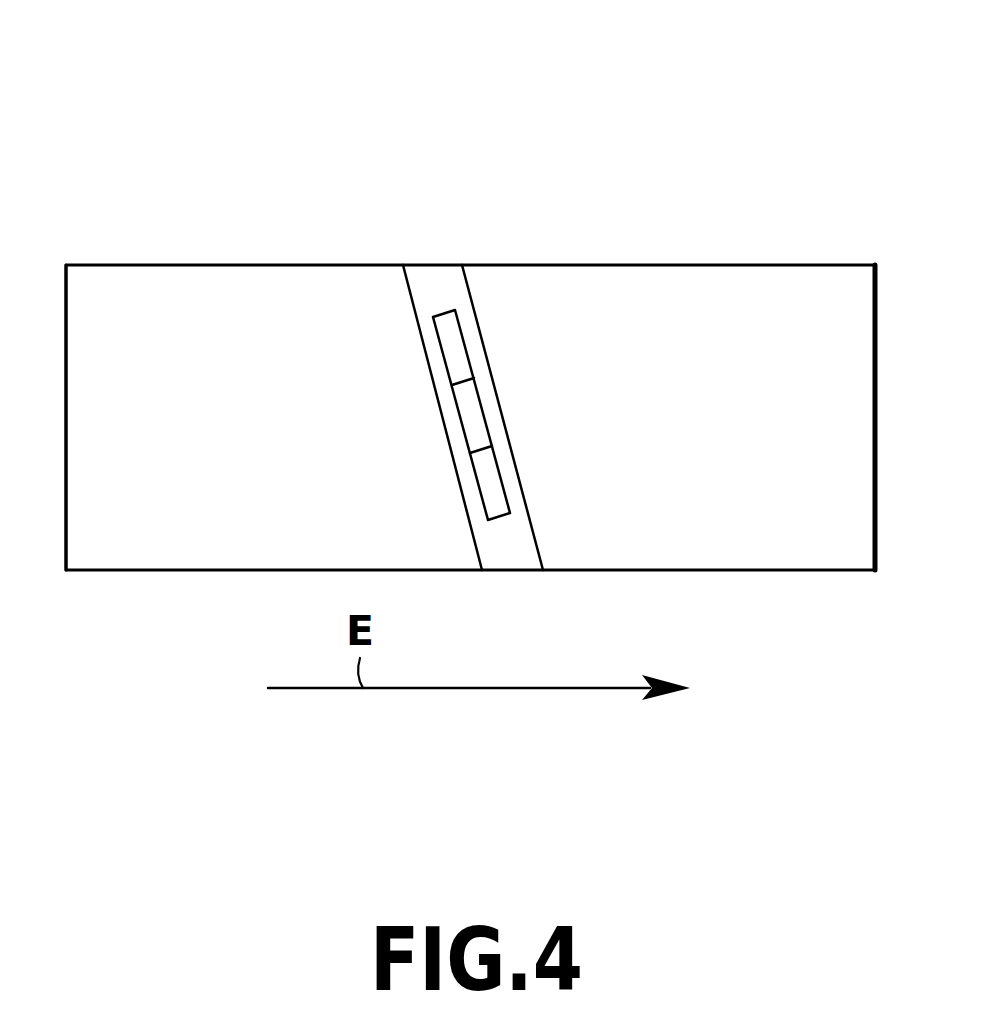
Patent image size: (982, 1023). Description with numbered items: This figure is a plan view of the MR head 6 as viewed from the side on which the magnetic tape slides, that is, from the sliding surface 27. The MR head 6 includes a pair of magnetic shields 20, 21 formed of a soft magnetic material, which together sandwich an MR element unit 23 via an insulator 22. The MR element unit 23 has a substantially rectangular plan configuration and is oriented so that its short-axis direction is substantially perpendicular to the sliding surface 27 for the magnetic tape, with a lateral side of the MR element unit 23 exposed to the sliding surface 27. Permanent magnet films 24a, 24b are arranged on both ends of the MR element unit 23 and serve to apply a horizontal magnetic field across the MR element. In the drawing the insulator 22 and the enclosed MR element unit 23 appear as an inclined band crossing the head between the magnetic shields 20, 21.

The MR head 6 is at (723, 182).
The magnetic shield 20 is at (127, 528).
The magnetic shield 21 is at (797, 518).
The insulator 22 is at (422, 278).
The MR element unit 23 is at (468, 407).
The permanent magnet film 24a is at (455, 333).
The permanent magnet film 24b is at (490, 483).
The sliding surface 27 is at (180, 287).